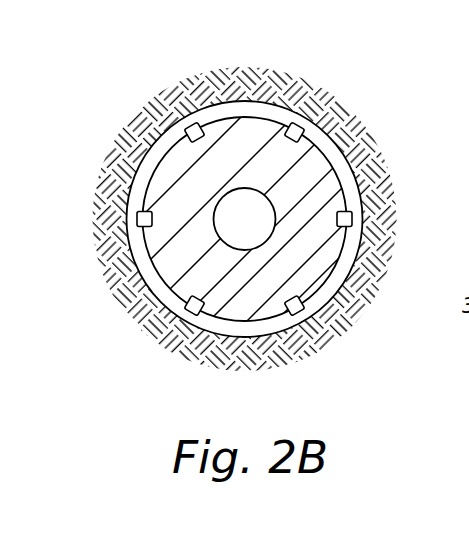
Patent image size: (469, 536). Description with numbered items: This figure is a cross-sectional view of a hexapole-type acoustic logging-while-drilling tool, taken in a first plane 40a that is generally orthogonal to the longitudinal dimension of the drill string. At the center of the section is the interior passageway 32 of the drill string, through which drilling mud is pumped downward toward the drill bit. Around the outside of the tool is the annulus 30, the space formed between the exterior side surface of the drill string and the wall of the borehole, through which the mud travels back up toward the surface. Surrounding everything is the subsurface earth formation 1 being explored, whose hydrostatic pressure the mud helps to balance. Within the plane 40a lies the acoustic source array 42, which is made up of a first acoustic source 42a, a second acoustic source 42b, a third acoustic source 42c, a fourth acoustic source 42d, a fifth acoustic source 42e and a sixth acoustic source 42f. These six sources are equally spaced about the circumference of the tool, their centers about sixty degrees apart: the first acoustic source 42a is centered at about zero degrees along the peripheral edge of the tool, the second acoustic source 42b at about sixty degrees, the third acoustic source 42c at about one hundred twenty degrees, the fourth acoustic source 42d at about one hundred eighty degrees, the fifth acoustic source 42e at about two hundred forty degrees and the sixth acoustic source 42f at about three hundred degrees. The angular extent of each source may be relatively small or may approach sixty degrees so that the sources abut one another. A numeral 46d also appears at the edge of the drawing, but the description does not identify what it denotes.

The subsurface earth formation 1 is at (127, 132).
The annulus 30 is at (331, 145).
The interior passageway 32 is at (218, 230).
The plane 40a is at (243, 137).
The acoustic source array 42 is at (247, 221).
The first acoustic source 42a is at (352, 214).
The second acoustic source 42b is at (300, 126).
The third acoustic source 42c is at (190, 126).
The fourth acoustic source 42d is at (137, 217).
The fifth acoustic source 42e is at (193, 306).
The sixth acoustic source 42f is at (297, 307).
The conductor 46d is at (453, 246).